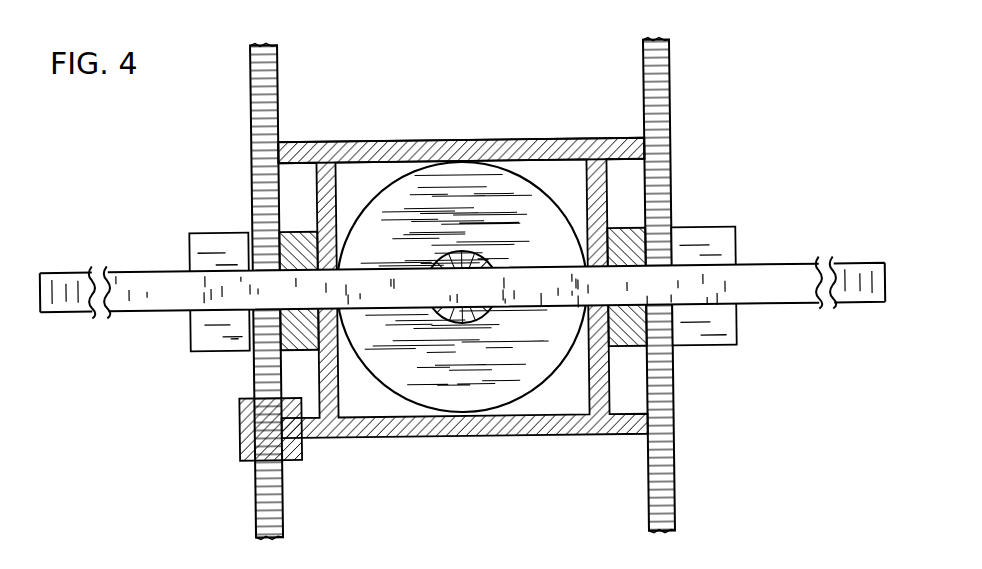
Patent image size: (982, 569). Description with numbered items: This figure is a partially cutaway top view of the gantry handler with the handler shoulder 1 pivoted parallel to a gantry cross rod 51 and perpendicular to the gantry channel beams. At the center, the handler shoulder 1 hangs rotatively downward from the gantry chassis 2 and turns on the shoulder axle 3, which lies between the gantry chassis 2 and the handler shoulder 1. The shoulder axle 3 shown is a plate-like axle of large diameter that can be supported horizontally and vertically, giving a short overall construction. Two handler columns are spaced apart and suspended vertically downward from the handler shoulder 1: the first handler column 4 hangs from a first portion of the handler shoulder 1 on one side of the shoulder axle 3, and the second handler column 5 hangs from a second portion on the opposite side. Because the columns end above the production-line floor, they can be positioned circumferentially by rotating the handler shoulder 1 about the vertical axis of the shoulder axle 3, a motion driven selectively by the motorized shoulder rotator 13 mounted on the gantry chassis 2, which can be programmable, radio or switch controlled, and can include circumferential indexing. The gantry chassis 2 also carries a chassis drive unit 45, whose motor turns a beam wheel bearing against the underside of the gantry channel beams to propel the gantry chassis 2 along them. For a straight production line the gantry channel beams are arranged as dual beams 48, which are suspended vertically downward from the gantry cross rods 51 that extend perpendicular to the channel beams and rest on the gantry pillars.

The handler shoulder 1 is at (340, 249).
The gantry chassis 2 is at (411, 152).
The shoulder axle 3 is at (463, 222).
The motorized shoulder rotator 13 is at (470, 262).
The first handler column 4 is at (218, 242).
The second handler column 5 is at (706, 246).
The gantry cross rod 51 is at (58, 285).
The chassis drive unit 45 is at (250, 430).
The dual beams 48 is at (244, 494).